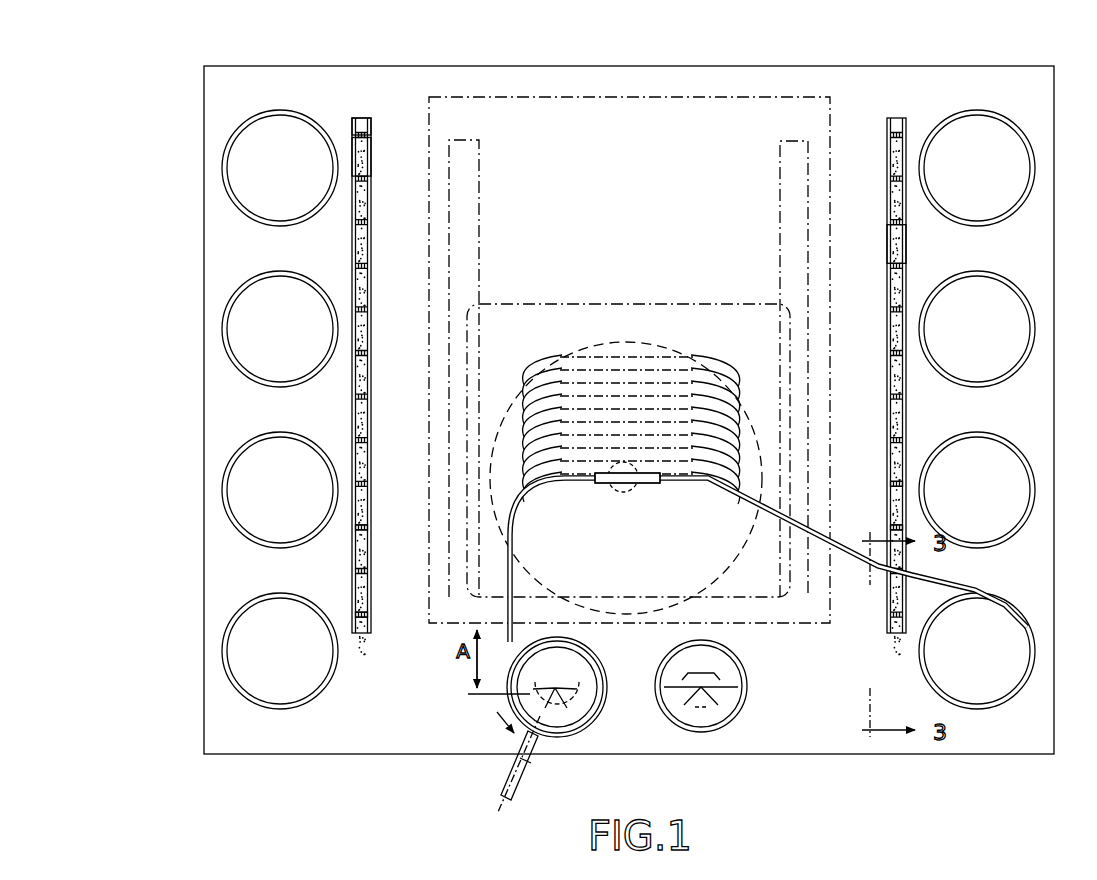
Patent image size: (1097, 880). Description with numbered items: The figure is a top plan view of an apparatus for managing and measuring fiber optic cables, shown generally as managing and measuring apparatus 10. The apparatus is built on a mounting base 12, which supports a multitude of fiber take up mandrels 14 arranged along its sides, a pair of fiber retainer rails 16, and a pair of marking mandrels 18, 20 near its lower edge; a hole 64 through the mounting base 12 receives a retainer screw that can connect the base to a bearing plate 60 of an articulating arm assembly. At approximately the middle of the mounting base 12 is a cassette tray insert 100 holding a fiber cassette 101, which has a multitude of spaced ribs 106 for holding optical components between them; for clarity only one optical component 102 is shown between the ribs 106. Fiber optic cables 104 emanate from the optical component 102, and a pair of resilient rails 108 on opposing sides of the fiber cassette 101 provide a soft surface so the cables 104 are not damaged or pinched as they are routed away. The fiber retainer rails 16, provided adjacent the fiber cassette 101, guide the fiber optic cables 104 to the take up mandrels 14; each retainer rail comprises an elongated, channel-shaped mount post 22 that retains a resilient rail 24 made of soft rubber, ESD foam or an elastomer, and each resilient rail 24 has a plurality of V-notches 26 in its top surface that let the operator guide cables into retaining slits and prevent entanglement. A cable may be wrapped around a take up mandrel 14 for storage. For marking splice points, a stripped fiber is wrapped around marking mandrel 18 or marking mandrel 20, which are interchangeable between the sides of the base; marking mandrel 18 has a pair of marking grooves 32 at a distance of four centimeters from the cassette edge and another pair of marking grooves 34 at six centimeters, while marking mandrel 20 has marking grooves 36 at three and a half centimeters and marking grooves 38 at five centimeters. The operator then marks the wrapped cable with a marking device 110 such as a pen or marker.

The managing and measuring apparatus 10 is at (166, 186).
The mounting base 12 is at (1016, 82).
The fiber take up mandrels 14 is at (252, 197).
The fiber retainer rails 16 is at (363, 112).
The marking mandrel 18 is at (537, 714).
The marking mandrel 20 is at (710, 714).
The mount post 22 is at (352, 126).
The resilient rail 24 is at (365, 150).
The V-notches 26 is at (367, 530).
The marking grooves 32 is at (522, 694).
The marking grooves 34 is at (567, 737).
The marking grooves 36 is at (656, 680).
The marking grooves 38 is at (722, 727).
The bearing plate 60 is at (512, 430).
The hole 64 is at (655, 488).
The cassette tray insert 100 is at (610, 92).
The fiber cassette 101 is at (612, 330).
The optical component 102 is at (622, 487).
The fiber optic cables 104 is at (513, 572).
The ribs 106 is at (690, 375).
The resilient rails 108 is at (462, 203).
The marking device 110 is at (513, 773).